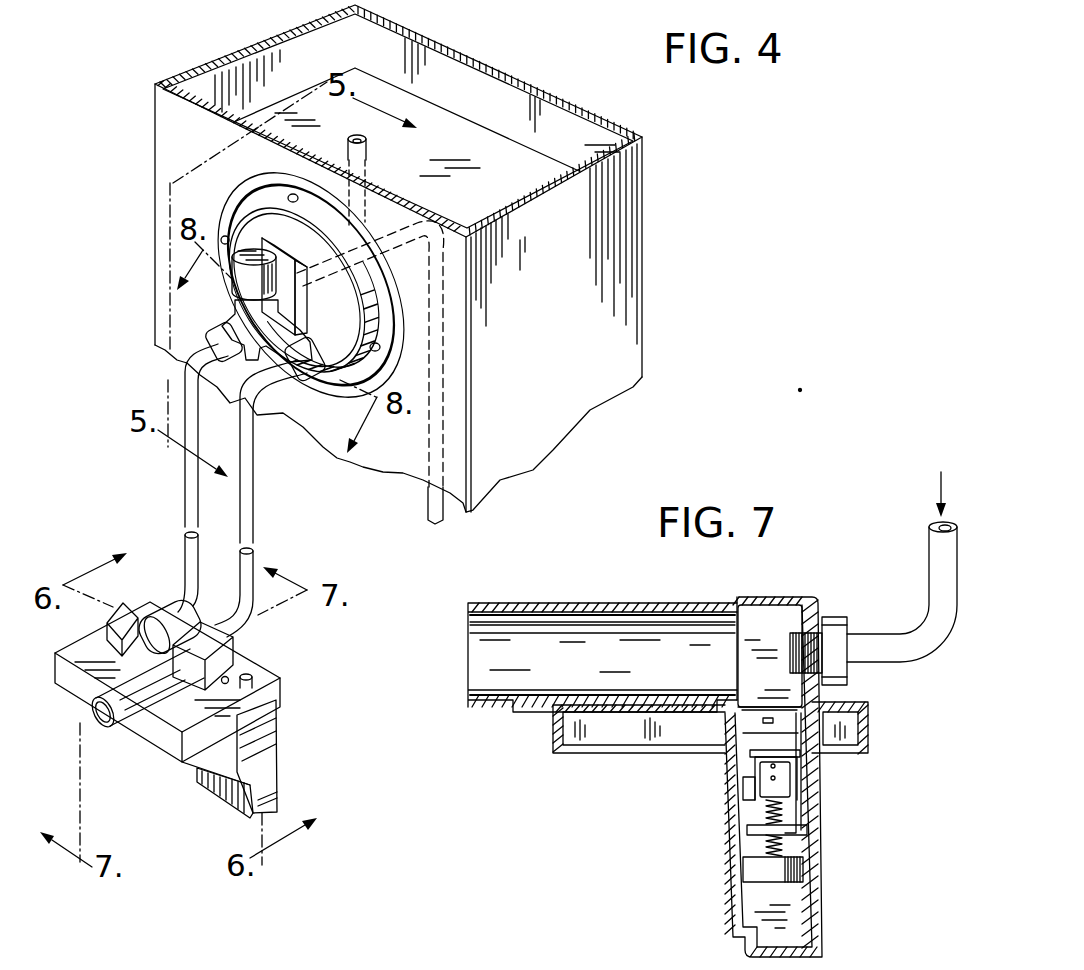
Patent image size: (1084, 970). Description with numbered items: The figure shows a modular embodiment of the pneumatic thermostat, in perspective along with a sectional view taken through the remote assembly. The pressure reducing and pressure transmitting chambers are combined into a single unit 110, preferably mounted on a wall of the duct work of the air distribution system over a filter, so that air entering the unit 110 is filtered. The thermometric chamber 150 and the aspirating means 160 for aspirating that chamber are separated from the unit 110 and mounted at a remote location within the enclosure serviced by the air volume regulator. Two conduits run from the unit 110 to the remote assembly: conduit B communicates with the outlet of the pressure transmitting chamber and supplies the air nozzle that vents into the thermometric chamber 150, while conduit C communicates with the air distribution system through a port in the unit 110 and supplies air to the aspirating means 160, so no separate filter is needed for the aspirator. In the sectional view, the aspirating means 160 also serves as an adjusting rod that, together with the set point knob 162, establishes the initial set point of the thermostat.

In FIG. 4, the unit 110 is at (247, 188).
In FIG. 4, the thermometric chamber 150 is at (260, 755).
In FIG. 4, the aspirating means 160 is at (128, 722).
In FIG. 7, the aspirating means 160 is at (631, 595).
In FIG. 7, the set point knob 162 is at (757, 870).
In FIG. 4, the conduit B is at (187, 493).
In FIG. 4, the conduit C is at (248, 500).
In FIG. 7, the conduit C is at (929, 566).